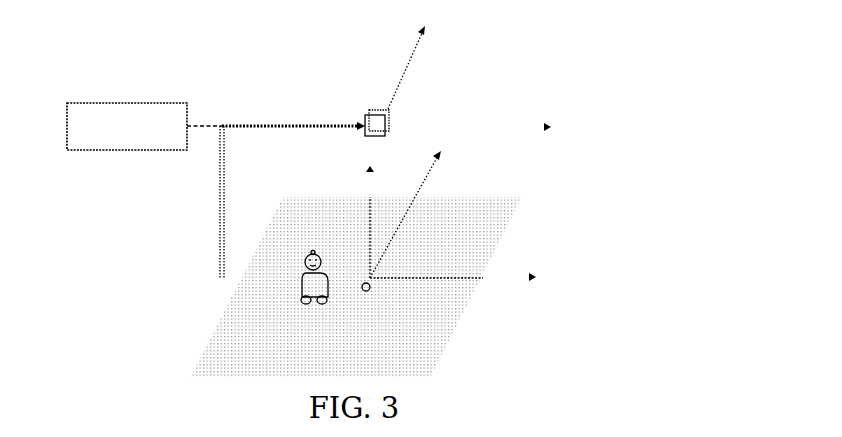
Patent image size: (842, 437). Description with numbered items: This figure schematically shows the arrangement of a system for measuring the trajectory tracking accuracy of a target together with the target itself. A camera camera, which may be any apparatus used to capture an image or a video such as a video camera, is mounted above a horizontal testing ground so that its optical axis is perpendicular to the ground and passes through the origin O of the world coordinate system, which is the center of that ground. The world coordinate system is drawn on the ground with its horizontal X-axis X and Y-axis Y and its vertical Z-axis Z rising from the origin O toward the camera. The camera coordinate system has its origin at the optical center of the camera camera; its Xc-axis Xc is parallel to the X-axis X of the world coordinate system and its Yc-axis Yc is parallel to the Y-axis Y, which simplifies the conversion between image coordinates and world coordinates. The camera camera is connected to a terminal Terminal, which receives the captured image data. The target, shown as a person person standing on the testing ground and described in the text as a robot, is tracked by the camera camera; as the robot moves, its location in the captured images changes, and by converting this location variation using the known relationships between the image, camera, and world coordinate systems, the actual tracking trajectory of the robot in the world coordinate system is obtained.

The terminal Terminal is at (127, 126).
The element camera is at (377, 123).
The Yc-axis of camera coordinate system Yc is at (427, 60).
The Xc-axis of camera coordinate system Xc is at (569, 129).
The X-axis of world coordinate system X is at (463, 284).
The Y-axis of world coordinate system Y is at (413, 211).
The Z-axis of world coordinate system Z is at (361, 214).
The origin of world coordinate system O is at (366, 287).
The target person is at (314, 278).